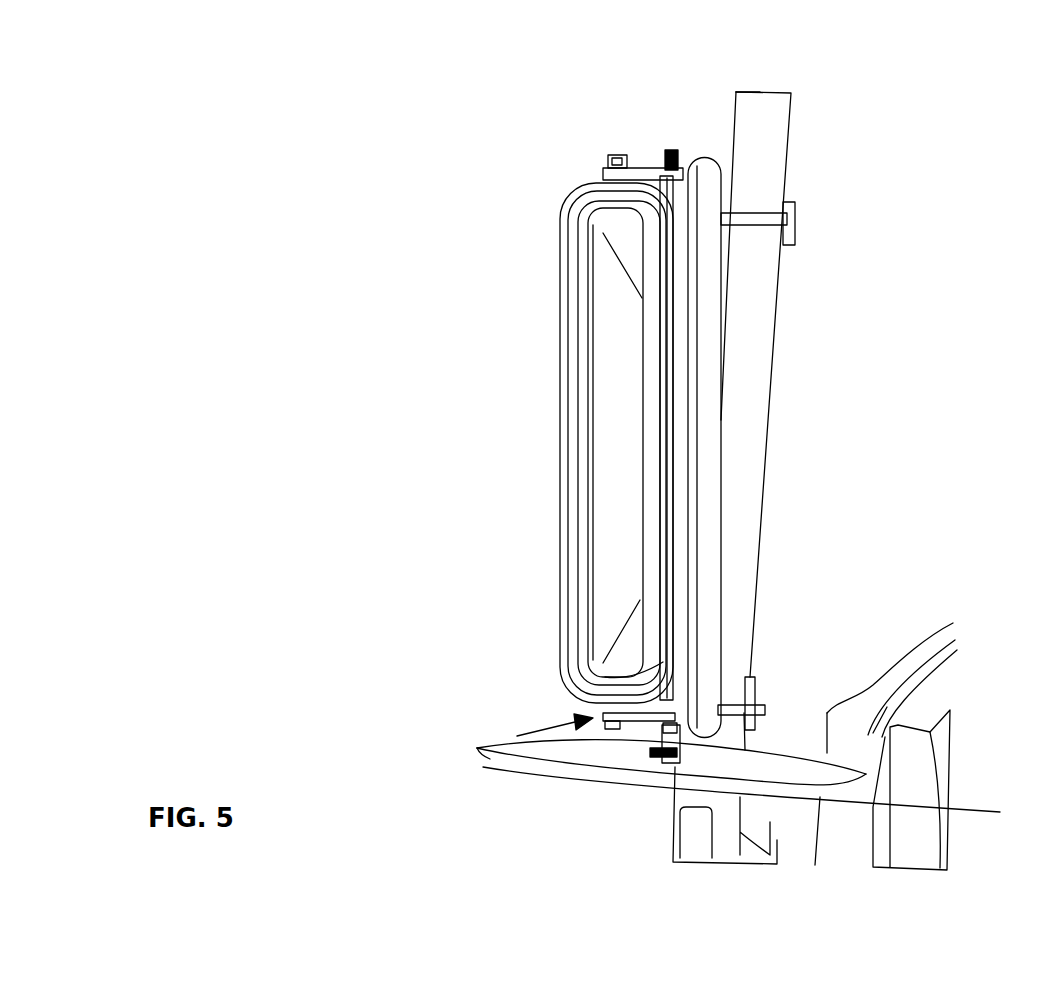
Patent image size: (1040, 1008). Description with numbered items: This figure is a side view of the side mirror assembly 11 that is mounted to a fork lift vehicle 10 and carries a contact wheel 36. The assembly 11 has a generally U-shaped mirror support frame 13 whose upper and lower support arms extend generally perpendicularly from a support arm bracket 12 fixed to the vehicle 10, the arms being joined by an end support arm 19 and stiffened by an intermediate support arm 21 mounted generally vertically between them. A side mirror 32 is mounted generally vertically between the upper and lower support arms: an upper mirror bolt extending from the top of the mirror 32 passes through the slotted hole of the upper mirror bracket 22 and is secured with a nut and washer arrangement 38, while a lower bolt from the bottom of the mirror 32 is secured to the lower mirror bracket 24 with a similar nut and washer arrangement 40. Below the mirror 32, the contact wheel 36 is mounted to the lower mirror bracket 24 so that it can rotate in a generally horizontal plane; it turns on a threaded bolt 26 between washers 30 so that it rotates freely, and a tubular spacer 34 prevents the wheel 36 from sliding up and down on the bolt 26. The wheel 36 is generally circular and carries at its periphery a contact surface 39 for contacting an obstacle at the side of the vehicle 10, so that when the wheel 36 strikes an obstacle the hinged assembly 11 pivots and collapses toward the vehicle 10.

The fork lift vehicle 10 is at (770, 118).
The side mirror assembly 11 is at (545, 172).
The support arm bracket 12 is at (797, 217).
The mirror support frame 13 is at (718, 165).
The end support arm 19 is at (703, 380).
The intermediate support arm 21 is at (678, 480).
The upper mirror bracket 22 is at (642, 168).
The lower mirror bracket 24 is at (590, 762).
The threaded bolt 26 is at (603, 676).
The washers 30 is at (673, 790).
The side mirror 32 is at (593, 425).
The tubular spacer 34 is at (660, 744).
The contact wheel 36 is at (795, 750).
The nut and washer arrangement 38 is at (592, 140).
The contact surface 39 is at (497, 763).
The nut and washer arrangement 40 is at (483, 752).